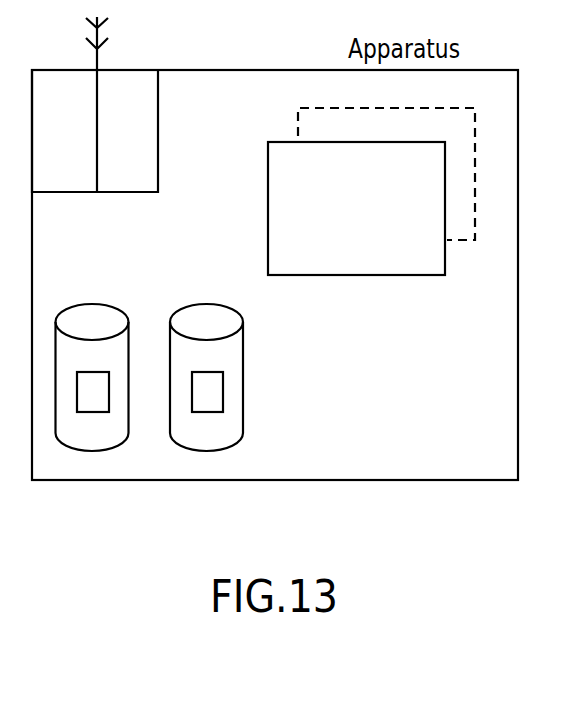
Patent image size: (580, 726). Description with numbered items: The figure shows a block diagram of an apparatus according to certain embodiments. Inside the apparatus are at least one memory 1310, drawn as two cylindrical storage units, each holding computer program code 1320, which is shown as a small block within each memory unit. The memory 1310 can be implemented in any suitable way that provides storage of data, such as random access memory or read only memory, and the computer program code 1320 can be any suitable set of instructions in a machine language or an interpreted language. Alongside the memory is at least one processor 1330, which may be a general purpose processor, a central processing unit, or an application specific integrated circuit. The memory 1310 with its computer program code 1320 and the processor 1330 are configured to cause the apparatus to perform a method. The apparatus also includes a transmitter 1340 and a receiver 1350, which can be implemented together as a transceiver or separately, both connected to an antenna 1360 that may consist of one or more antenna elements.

The memory 1310 is at (205, 303).
The computer program code 1320 is at (208, 392).
The processor 1330 is at (371, 191).
The transmitter 1340 is at (64, 131).
The receiver 1350 is at (127, 131).
The antenna 1360 is at (126, 43).